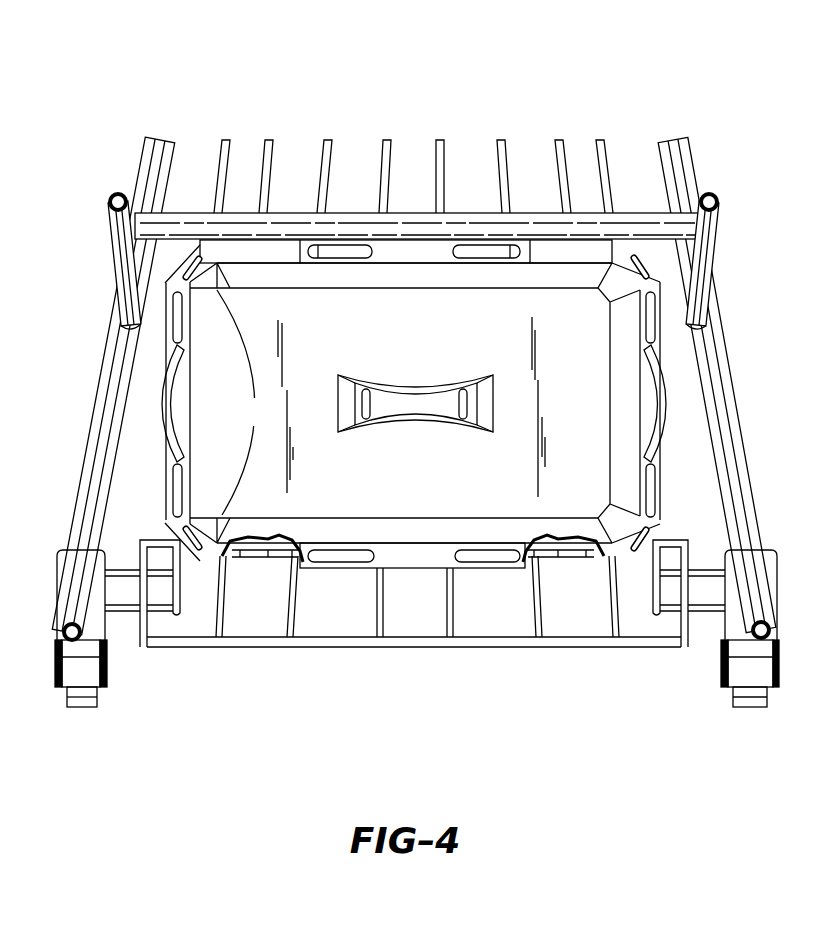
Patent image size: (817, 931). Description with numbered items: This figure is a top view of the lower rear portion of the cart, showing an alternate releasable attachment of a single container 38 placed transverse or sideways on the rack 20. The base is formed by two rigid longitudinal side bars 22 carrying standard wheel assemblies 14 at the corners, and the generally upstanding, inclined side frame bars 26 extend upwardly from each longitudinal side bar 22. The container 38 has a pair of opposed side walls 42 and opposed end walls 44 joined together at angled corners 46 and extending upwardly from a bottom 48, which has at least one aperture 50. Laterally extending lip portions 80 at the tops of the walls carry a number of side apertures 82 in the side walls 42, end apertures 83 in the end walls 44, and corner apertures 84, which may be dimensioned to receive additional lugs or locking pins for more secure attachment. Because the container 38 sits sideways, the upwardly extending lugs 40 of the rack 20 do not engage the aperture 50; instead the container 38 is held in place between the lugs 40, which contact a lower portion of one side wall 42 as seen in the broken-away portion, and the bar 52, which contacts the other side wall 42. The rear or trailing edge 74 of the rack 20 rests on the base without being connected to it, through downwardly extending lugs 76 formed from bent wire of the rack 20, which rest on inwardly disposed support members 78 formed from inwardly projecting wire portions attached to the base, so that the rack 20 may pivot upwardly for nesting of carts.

The wheel assemblies 14 is at (93, 720).
The rack structure 20 is at (440, 168).
The longitudinal side bars 22 is at (157, 160).
The side frame bars 26 is at (128, 247).
The container 38 is at (682, 419).
The lugs 40 is at (253, 553).
The side walls 42 is at (392, 275).
The end walls 44 is at (625, 388).
The angled corners 46 is at (727, 140).
The bottom 48 is at (396, 350).
The aperture 50 is at (452, 405).
The bar 52 is at (515, 227).
The rear edge 74 is at (348, 640).
The downwardly extending lugs 76 is at (142, 568).
The support members 78 is at (130, 613).
The lip portion 80 is at (262, 255).
The side apertures 82 is at (347, 250).
The end apertures 83 is at (173, 323).
The corner apertures 84 is at (197, 272).